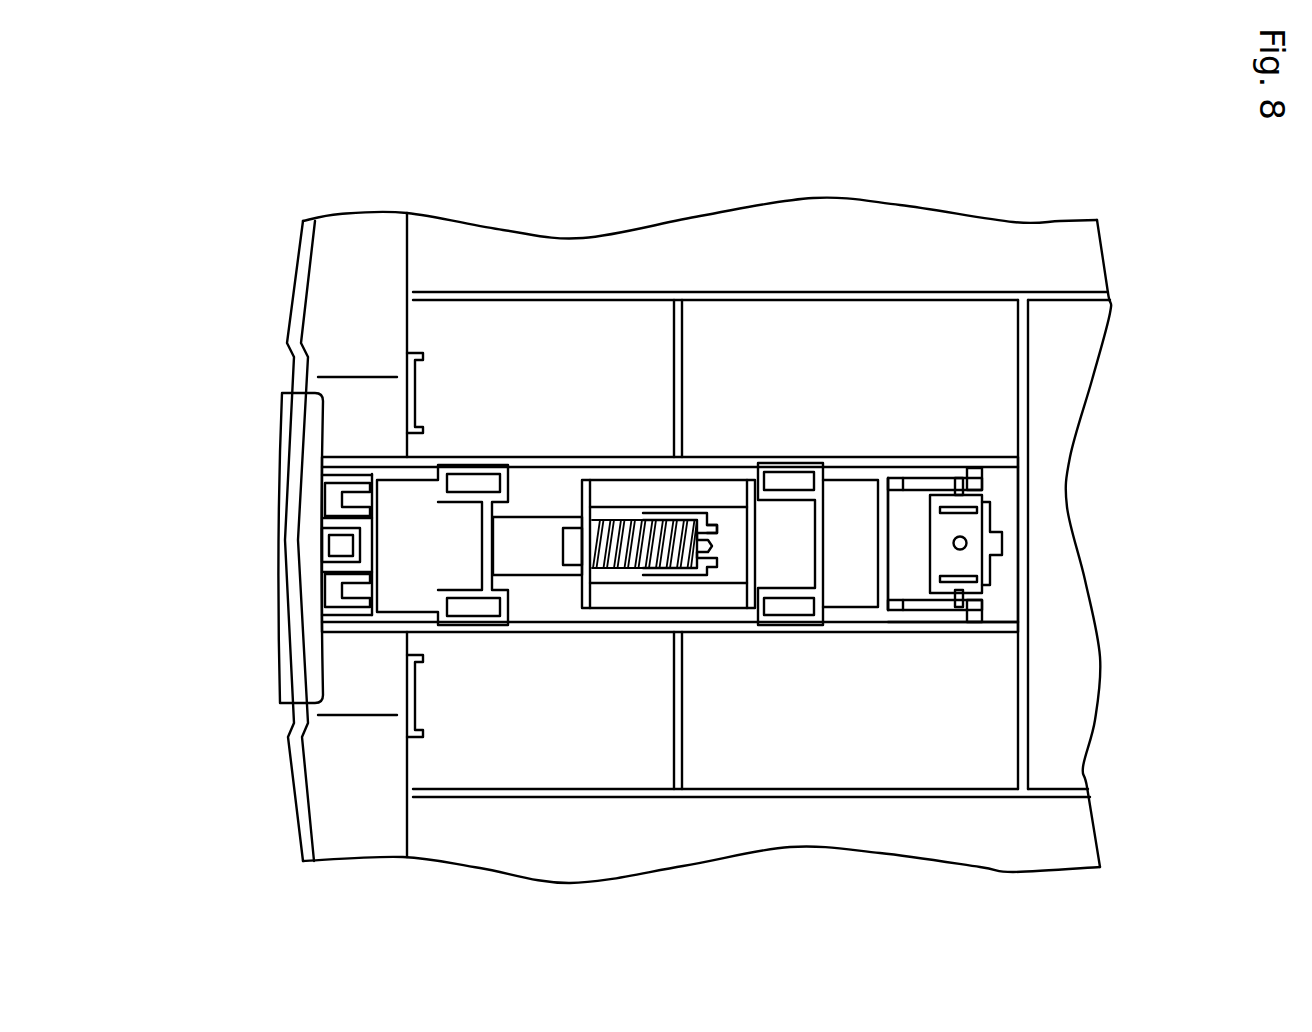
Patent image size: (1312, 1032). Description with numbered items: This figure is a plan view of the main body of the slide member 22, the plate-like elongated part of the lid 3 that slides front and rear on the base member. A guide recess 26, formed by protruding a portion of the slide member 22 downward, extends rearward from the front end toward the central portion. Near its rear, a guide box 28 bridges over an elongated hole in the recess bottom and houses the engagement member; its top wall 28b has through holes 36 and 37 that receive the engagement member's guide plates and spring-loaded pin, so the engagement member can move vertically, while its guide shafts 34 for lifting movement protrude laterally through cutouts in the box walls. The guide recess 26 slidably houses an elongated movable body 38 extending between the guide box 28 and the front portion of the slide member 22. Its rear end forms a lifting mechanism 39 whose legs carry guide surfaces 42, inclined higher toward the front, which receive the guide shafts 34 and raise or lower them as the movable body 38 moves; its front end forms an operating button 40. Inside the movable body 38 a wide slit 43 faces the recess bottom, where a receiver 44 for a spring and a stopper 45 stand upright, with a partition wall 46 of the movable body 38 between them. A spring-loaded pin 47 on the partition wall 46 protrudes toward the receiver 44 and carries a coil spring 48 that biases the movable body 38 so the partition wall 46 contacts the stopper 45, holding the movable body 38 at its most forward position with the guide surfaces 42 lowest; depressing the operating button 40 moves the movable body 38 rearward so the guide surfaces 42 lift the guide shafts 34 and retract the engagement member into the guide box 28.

The lid 3 is at (1067, 150).
The slide member 22 is at (712, 250).
The guide recess 26 is at (660, 465).
The guide box 28 is at (972, 528).
The top wall 28b is at (1003, 543).
The guide shafts for lifting movement 34 is at (963, 483).
The through hole 36 is at (975, 505).
The through hole 37 is at (968, 550).
The movable body 38 is at (430, 520).
The lifting mechanism 39 is at (953, 621).
The operating button 40 is at (276, 586).
The guide surfaces 42 is at (920, 483).
The wide slit 43 is at (516, 520).
The receiver 44 is at (713, 572).
The stopper 45 is at (567, 548).
The partition wall 46 is at (592, 498).
The spring-loaded pin 47 is at (720, 535).
The coil spring 48 is at (627, 568).